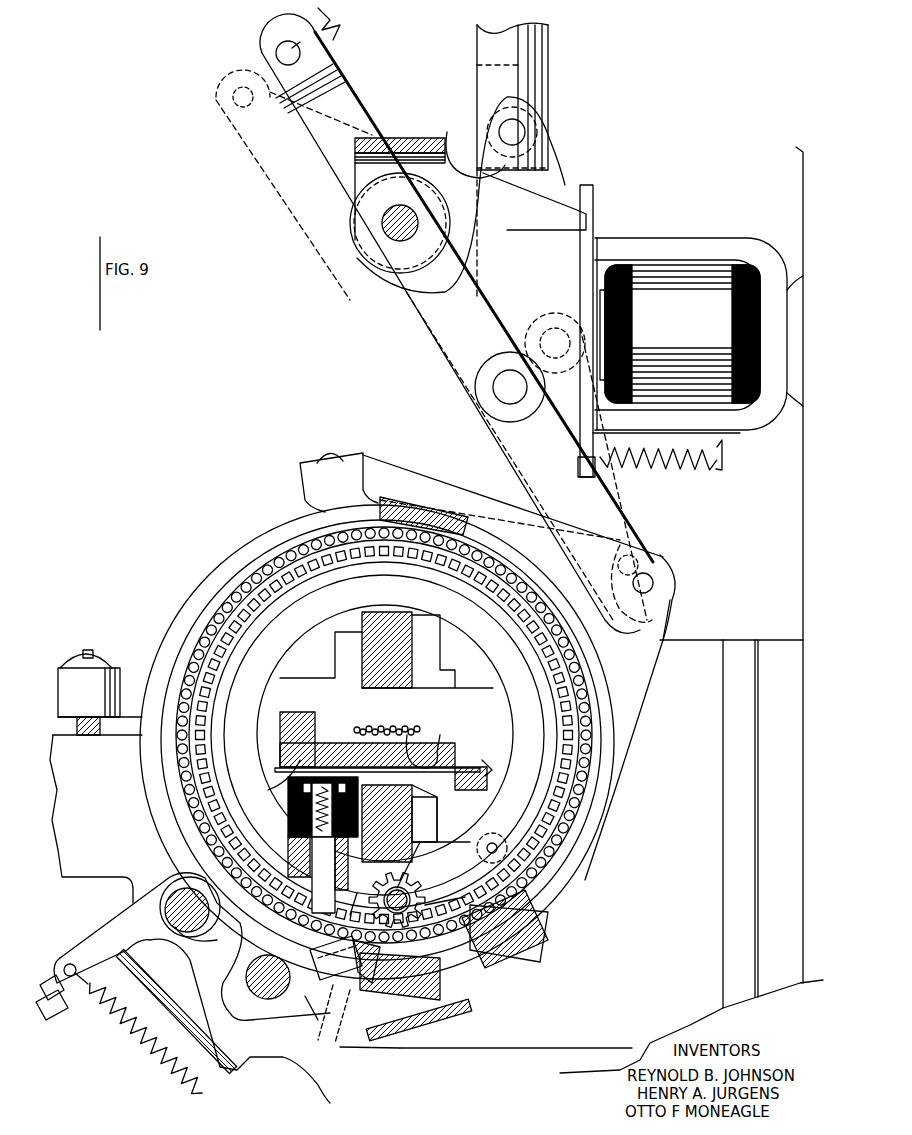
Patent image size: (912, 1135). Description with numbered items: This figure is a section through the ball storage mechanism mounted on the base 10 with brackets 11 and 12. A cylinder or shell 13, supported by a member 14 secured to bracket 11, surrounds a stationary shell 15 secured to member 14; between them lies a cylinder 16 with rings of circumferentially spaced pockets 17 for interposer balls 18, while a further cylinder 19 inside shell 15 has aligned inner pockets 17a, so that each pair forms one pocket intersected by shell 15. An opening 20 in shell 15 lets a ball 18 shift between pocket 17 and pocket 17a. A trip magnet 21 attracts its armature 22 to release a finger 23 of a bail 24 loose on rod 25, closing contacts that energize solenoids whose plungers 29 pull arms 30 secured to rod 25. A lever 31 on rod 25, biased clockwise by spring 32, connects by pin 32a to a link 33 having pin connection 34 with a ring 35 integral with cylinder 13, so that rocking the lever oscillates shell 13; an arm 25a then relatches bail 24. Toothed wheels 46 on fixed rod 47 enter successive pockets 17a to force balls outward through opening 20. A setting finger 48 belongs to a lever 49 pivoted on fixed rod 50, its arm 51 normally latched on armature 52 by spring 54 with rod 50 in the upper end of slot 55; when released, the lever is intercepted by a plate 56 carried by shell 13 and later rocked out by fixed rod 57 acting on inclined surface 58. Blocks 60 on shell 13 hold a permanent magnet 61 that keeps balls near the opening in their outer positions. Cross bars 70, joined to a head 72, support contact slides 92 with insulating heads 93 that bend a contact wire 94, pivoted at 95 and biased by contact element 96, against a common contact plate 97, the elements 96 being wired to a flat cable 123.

The base 10 is at (805, 565).
The bracket 11 is at (138, 670).
The bracket 12 is at (398, 842).
The cylinder or shell 13 is at (595, 852).
The member 14 is at (377, 742).
The shell or cylinder 15 is at (572, 663).
The cylinder 16 is at (592, 710).
The pocket 17 is at (480, 905).
The pocket 17a is at (445, 894).
The interposer ball 18 is at (590, 746).
The cylinder 19 is at (560, 666).
The opening 20 is at (355, 893).
The trip magnet 21 is at (698, 354).
The armature 22 is at (594, 232).
The finger 23 is at (560, 203).
The bail 24 is at (428, 138).
The rod 25 is at (382, 223).
The arm 25a is at (450, 128).
The plunger 29 is at (548, 50).
The arm 30 is at (405, 292).
The lever 31 is at (352, 86).
The spring 32 is at (340, 22).
The pin 32a is at (495, 395).
The link 33 is at (523, 457).
The pin connection 34 is at (653, 580).
The ring 35 is at (668, 606).
The toothed wheel 46 is at (410, 888).
The fixed rod 47 is at (415, 856).
The setting finger 48 is at (329, 1014).
The lever 49 is at (192, 988).
The fixed rod 50 is at (170, 888).
The arm 51 is at (75, 950).
The armature 52 is at (60, 1020).
The spring 54 is at (152, 1070).
The slot 55 is at (185, 936).
The plate 56 is at (375, 1042).
The fixed rod 57 is at (268, 1000).
The inclined surface 58 is at (290, 1012).
The block 60 is at (548, 966).
The permanent magnet 61 is at (520, 962).
The cross bar 70 is at (428, 668).
The head 72 is at (347, 638).
The contact slide 92 is at (318, 875).
The insulating head 93 is at (288, 820).
The contact wire 94 is at (270, 788).
The pivot 95 is at (486, 766).
The contact element 96 is at (442, 746).
The common contact plate 97 is at (278, 740).
The flat cable 123 is at (360, 728).